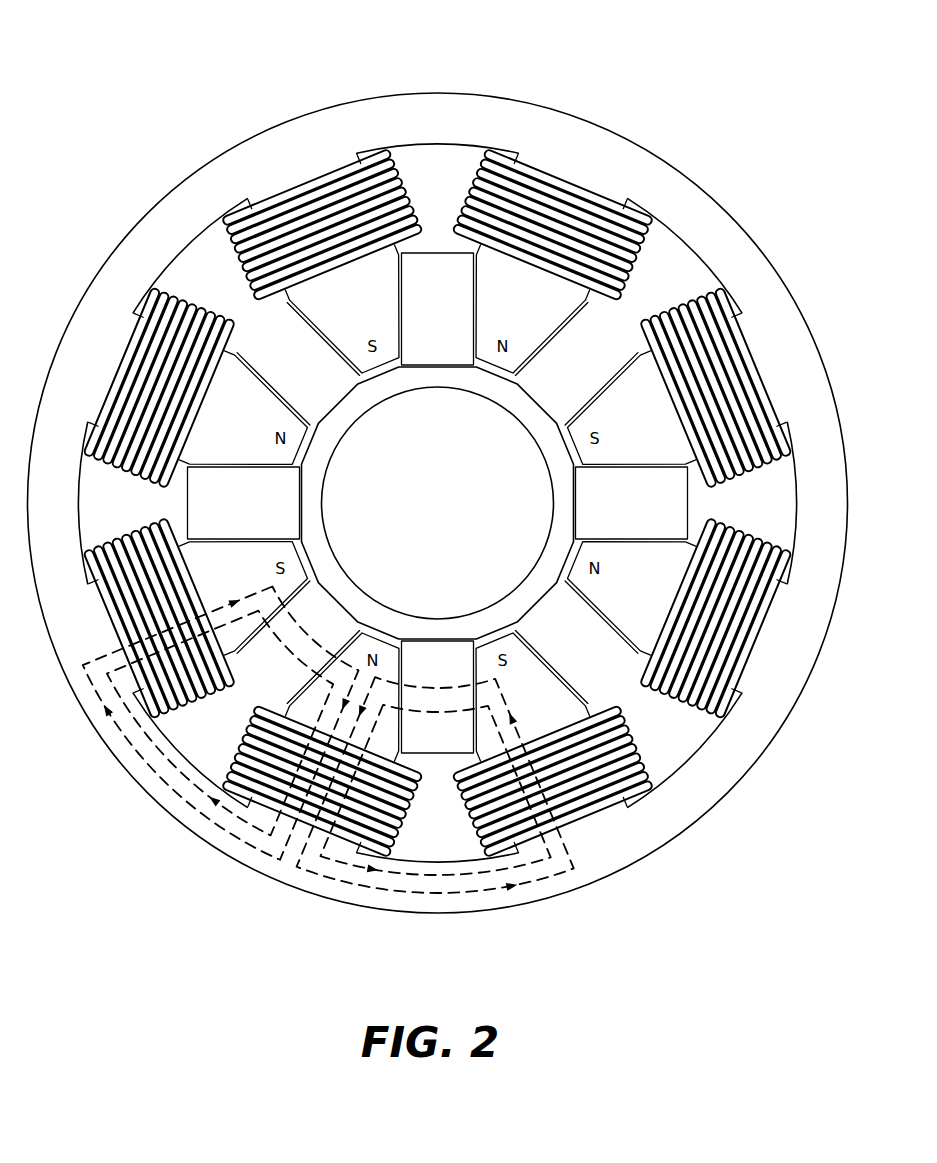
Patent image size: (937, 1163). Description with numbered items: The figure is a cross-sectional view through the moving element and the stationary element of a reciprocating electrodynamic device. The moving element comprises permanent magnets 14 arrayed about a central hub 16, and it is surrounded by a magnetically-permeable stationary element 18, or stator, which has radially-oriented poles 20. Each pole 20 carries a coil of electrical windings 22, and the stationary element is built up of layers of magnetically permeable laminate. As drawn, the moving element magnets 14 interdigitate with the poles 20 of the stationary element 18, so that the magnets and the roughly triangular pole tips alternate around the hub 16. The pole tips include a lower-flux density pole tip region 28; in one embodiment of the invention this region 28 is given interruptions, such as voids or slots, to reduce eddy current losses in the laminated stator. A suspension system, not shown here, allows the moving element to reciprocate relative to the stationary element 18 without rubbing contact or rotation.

The permanent magnets 14 is at (290, 496).
The hub 16 is at (558, 497).
The stationary element 18 is at (505, 113).
The poles 20 is at (490, 350).
The coil of electrical windings 22 is at (550, 176).
The lower-flux density pole tip region 28 is at (385, 350).